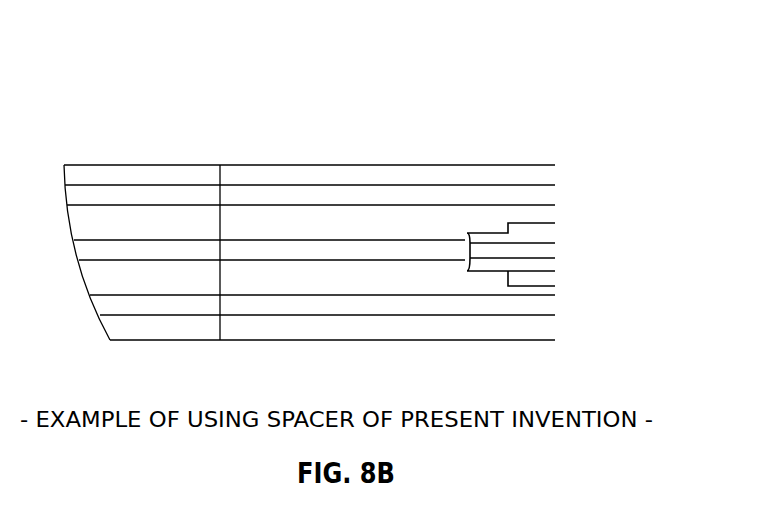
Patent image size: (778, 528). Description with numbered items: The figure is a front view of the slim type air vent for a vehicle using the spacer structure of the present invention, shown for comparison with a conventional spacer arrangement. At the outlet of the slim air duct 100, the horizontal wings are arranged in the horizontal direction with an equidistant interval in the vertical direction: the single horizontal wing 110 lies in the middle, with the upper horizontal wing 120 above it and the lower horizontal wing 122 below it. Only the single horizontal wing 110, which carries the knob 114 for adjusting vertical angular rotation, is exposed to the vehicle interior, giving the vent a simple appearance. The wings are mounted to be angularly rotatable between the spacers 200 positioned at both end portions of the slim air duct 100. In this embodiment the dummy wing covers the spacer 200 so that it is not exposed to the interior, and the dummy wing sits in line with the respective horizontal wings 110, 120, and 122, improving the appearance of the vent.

The spacer 200 is at (363, 219).
The slim air duct 100 is at (363, 228).
The single horizontal wing 110 is at (383, 248).
The upper horizontal wing 120 is at (466, 195).
The knob 114 is at (545, 252).
The lower horizontal wing 122 is at (510, 308).